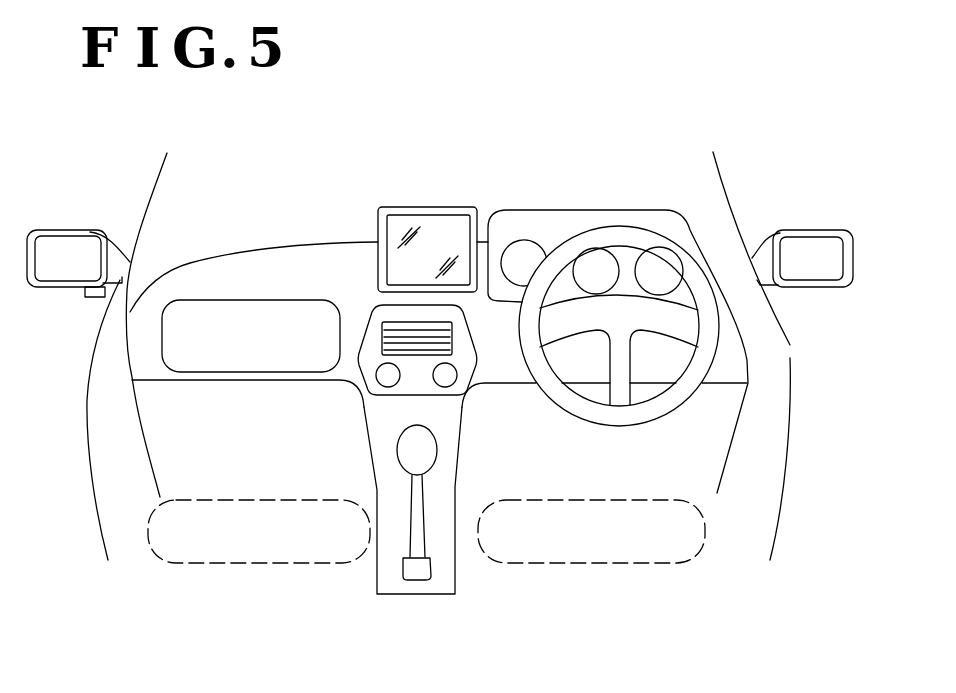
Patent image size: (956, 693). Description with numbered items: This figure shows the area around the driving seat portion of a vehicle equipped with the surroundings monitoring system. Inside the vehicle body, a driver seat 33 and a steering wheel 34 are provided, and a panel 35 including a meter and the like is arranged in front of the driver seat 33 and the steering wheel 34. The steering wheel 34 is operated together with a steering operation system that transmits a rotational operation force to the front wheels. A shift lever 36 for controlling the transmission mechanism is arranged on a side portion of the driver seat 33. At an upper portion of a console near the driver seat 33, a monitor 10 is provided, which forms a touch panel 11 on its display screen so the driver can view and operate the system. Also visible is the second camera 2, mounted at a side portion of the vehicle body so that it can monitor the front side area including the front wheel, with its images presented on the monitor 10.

The second camera 2 is at (87, 298).
The monitor 10 is at (357, 240).
The touch panel 11 is at (378, 225).
The driver seat 33 is at (562, 497).
The steering wheel 34 is at (678, 253).
The panel 35 is at (580, 217).
The shift lever 36 is at (405, 448).